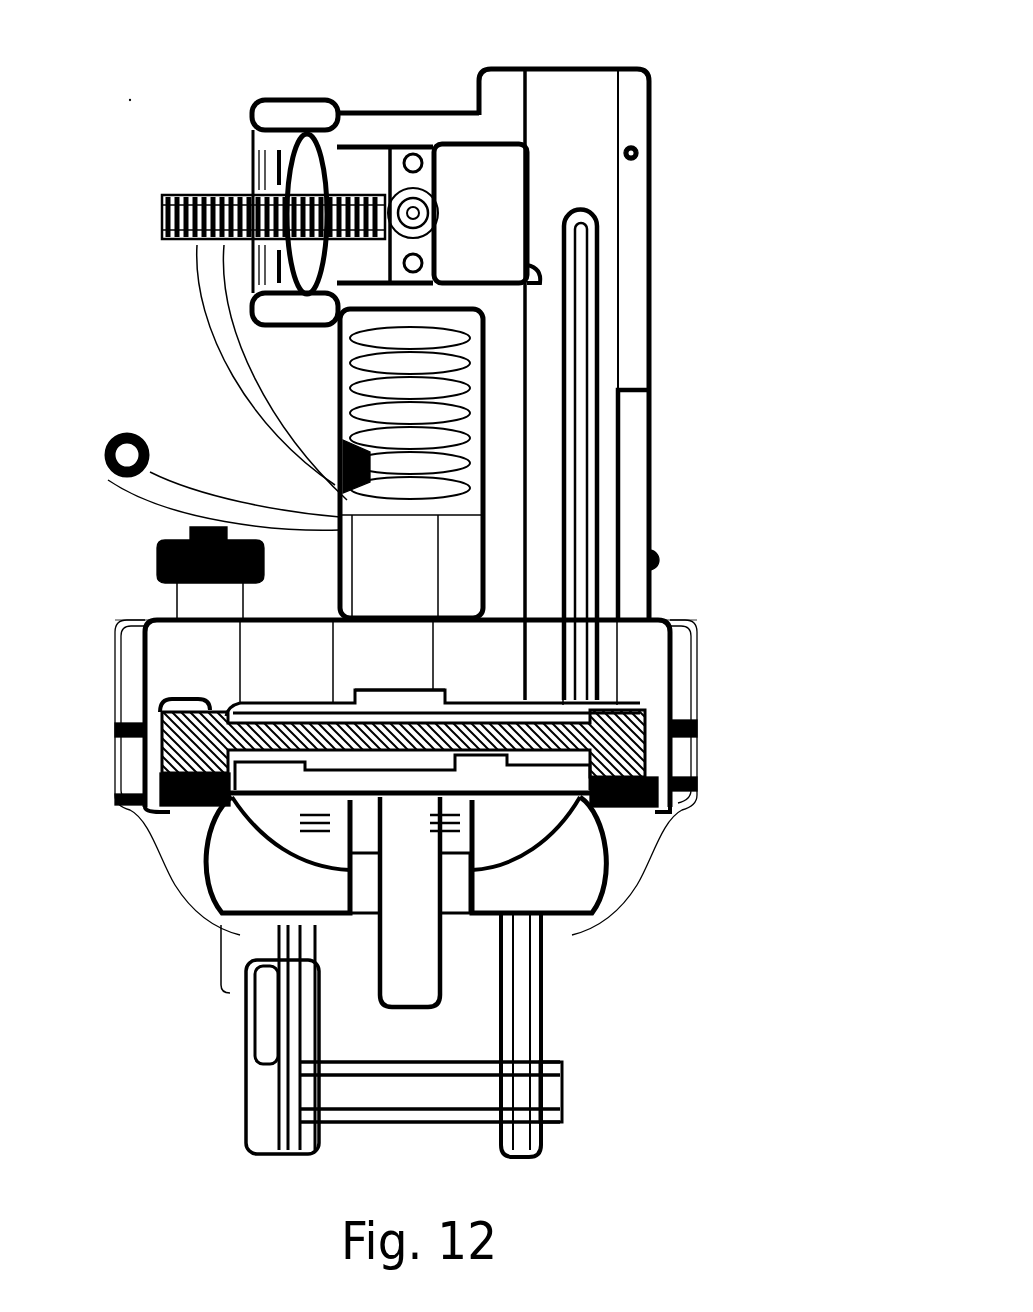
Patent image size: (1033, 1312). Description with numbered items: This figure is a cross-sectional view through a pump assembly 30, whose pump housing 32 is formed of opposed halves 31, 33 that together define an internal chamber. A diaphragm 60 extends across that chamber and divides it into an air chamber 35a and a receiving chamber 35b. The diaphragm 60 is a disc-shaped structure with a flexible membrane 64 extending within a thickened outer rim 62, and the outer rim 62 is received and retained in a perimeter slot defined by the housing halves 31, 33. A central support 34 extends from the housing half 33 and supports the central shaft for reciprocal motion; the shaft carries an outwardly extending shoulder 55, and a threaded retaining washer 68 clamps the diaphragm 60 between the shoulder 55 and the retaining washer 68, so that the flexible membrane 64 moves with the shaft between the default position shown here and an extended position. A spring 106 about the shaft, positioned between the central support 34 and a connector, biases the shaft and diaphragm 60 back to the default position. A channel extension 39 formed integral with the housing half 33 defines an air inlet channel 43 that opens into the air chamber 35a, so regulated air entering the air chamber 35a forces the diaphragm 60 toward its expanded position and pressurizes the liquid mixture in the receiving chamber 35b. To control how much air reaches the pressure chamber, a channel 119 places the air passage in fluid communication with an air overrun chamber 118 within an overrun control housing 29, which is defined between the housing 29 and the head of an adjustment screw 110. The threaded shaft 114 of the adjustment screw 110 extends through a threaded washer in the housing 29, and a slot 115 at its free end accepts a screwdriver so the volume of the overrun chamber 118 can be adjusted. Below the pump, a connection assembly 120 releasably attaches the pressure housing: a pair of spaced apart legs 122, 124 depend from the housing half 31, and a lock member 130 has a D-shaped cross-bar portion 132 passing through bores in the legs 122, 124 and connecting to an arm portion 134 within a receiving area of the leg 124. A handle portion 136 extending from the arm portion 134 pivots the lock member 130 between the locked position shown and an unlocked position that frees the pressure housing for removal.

The pump assembly 30 is at (142, 101).
The overrun control housing 29 is at (376, 113).
The channel extension 39 is at (588, 80).
The air inlet channel 43 is at (608, 612).
The channel 119 is at (540, 262).
The threaded shaft 114 is at (308, 132).
The adjustment screw 110 is at (211, 181).
The slot 115 is at (168, 222).
The air overrun chamber 118 is at (477, 168).
The spring 106 is at (353, 401).
The central support 34 is at (337, 517).
The pump housing half 33 is at (703, 658).
The pump housing half 31 is at (690, 783).
The pump housing 32 is at (723, 762).
The diaphragm 60 is at (165, 733).
The outer rim 62 is at (677, 692).
The shoulder 55 is at (355, 697).
The air chamber 35a is at (280, 698).
The receiving chamber 35b is at (253, 785).
The flexible membrane 64 is at (542, 748).
The retaining washer 68 is at (490, 765).
The connection assembly 120 is at (588, 1015).
The leg 122 is at (532, 990).
The leg 124 is at (317, 1143).
The lock member 130 is at (224, 1020).
The cross-bar portion 132 is at (562, 1103).
The arm portion 134 is at (262, 1033).
The handle portion 136 is at (220, 960).